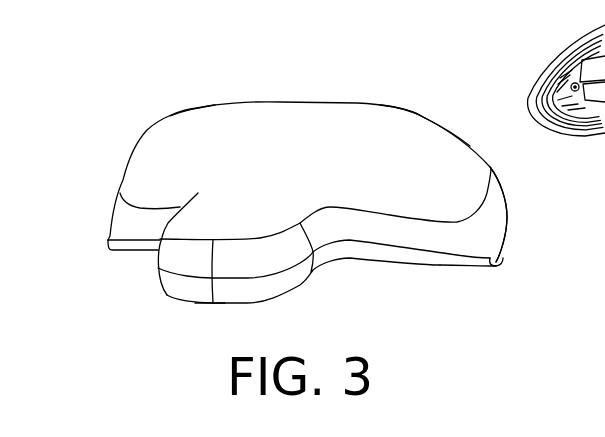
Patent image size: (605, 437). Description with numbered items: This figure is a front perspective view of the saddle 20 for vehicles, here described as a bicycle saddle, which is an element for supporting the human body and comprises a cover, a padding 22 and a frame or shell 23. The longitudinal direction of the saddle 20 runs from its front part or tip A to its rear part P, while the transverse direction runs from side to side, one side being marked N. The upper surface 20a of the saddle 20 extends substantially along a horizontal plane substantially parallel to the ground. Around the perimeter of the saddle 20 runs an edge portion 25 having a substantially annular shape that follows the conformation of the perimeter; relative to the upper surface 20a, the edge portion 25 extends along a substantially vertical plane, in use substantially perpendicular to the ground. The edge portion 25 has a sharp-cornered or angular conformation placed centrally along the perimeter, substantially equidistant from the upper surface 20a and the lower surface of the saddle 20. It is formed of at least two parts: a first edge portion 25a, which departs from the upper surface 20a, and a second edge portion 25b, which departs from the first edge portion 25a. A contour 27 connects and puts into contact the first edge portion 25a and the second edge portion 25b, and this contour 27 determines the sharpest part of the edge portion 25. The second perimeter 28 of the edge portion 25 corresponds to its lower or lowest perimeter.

The bicycle saddle 20 is at (516, 197).
The upper surface 20a is at (325, 189).
The padding 22 is at (456, 117).
The frame or shell 23 is at (340, 267).
The edge portion 25 is at (508, 249).
The first edge portion 25a is at (120, 224).
The second edge portion 25b is at (464, 259).
The contour 27 is at (107, 241).
The second perimeter 28 is at (296, 298).
The side of the saddle N is at (197, 101).
The rear part of the saddle P is at (410, 100).
The front part of the saddle A is at (205, 308).